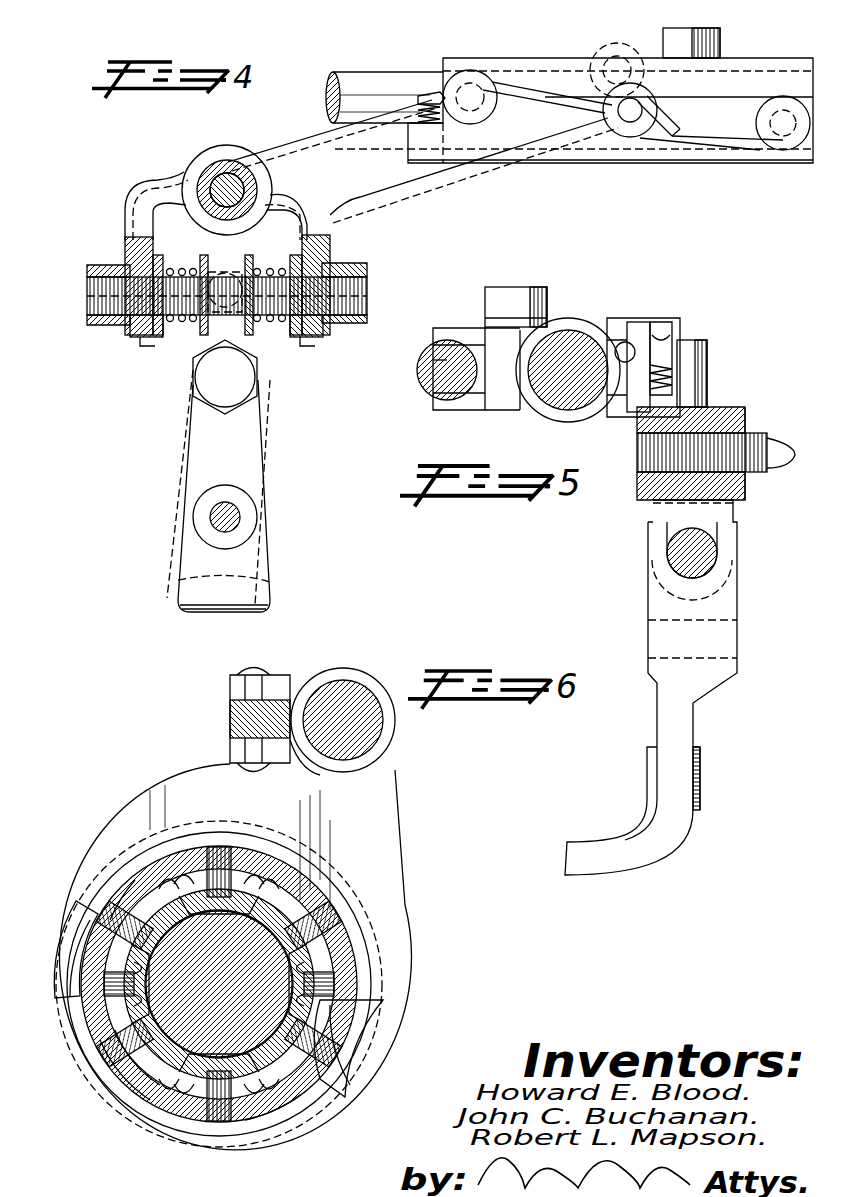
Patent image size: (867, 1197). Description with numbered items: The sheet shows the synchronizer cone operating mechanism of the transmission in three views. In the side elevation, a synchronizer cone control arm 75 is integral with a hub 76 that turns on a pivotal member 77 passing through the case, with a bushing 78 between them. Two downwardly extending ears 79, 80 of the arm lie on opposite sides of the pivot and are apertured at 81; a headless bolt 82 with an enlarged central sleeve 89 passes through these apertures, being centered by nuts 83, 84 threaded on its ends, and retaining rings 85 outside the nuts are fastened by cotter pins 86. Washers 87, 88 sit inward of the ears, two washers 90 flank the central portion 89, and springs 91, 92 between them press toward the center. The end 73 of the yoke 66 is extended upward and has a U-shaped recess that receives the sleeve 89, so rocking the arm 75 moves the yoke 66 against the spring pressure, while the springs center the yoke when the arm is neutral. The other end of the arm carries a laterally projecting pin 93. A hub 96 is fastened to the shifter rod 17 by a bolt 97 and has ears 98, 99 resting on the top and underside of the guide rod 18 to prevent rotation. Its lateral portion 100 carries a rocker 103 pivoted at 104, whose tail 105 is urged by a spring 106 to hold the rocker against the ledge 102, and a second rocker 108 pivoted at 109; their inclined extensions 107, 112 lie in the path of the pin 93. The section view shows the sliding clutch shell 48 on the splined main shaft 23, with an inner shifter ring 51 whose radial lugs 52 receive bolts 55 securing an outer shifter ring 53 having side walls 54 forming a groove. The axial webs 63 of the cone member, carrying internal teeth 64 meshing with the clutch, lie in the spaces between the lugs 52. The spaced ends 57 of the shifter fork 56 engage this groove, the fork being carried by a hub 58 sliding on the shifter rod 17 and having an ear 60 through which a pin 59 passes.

In FIG. 4, the shifter rod 17 is at (385, 87).
In FIG. 5, the shifter rod 17 is at (548, 400).
In FIG. 6, the shifter rod 17 is at (345, 705).
In FIG. 5, the guide rod 18 is at (425, 374).
In FIG. 6, the main shaft 23 is at (160, 1105).
In FIG. 6, the shell 48 is at (260, 1045).
In FIG. 6, the inner shifter ring 51 is at (330, 905).
In FIG. 6, the radially extending lugs 52 is at (300, 955).
In FIG. 6, the outer shifter ring 53 is at (235, 1115).
In FIG. 6, the side walls 54 is at (268, 1132).
In FIG. 6, the screws or bolts 55 is at (100, 1060).
In FIG. 6, the shifter fork 56 is at (190, 780).
In FIG. 6, the spaced ends 57 is at (70, 960).
In FIG. 6, the hub 58 is at (352, 668).
In FIG. 6, the pin 59 is at (253, 668).
In FIG. 6, the ear 60 is at (278, 685).
In FIG. 6, the axial webs 63 is at (260, 890).
In FIG. 6, the internal teeth 64 is at (120, 900).
In FIG. 4, the yoke 66 is at (262, 578).
In FIG. 5, the yoke 66 is at (626, 848).
In FIG. 5, the end of the yoke 73 is at (722, 607).
In FIG. 4, the synchronizer cone control arm 75 is at (377, 195).
In FIG. 5, the synchronizer cone control arm 75 is at (735, 410).
In FIG. 4, the hub 76 is at (210, 160).
In FIG. 4, the pivotal member 77 is at (232, 175).
In FIG. 4, the bushing 78 is at (200, 180).
In FIG. 4, the ear 79 is at (138, 337).
In FIG. 4, the ear 80 is at (310, 337).
In FIG. 4, the apertures 81 is at (150, 345).
In FIG. 4, the headless bolt 82 is at (300, 345).
In FIG. 4, the nut 83 is at (122, 258).
In FIG. 4, the nut 84 is at (335, 262).
In FIG. 4, the retaining rings 85 is at (95, 270).
In FIG. 4, the wire or cotter pins 86 is at (95, 302).
In FIG. 4, the washer 87 is at (165, 262).
In FIG. 4, the washer 88 is at (292, 256).
In FIG. 4, the central portion or sleeve 89 is at (225, 272).
In FIG. 5, the central portion or sleeve 89 is at (678, 552).
In FIG. 4, the washers 90 is at (250, 262).
In FIG. 4, the spring 91 is at (183, 323).
In FIG. 4, the spring 92 is at (262, 325).
In FIG. 4, the pin 93 is at (634, 130).
In FIG. 5, the hub 96 is at (575, 325).
In FIG. 4, the bolt 97 is at (670, 42).
In FIG. 5, the bolt 97 is at (510, 300).
In FIG. 5, the ear 98 is at (448, 338).
In FIG. 5, the ear 99 is at (455, 405).
In FIG. 4, the lateral portion 100 is at (515, 62).
In FIG. 5, the lateral portion 100 is at (640, 395).
In FIG. 4, the lateral extension or ledge 102 is at (570, 157).
In FIG. 4, the rocker 103 is at (515, 96).
In FIG. 4, the pivot 104 is at (470, 70).
In FIG. 5, the pivot 104 is at (633, 335).
In FIG. 4, the extension or tail 105 is at (432, 94).
In FIG. 5, the extension or tail 105 is at (675, 345).
In FIG. 4, the spring 106 is at (420, 113).
In FIG. 5, the spring 106 is at (708, 375).
In FIG. 4, the inclined lateral extension 107 is at (602, 58).
In FIG. 4, the rocker 108 is at (735, 135).
In FIG. 4, the pivot 109 is at (783, 137).
In FIG. 4, the inclined lateral projection 112 is at (673, 116).